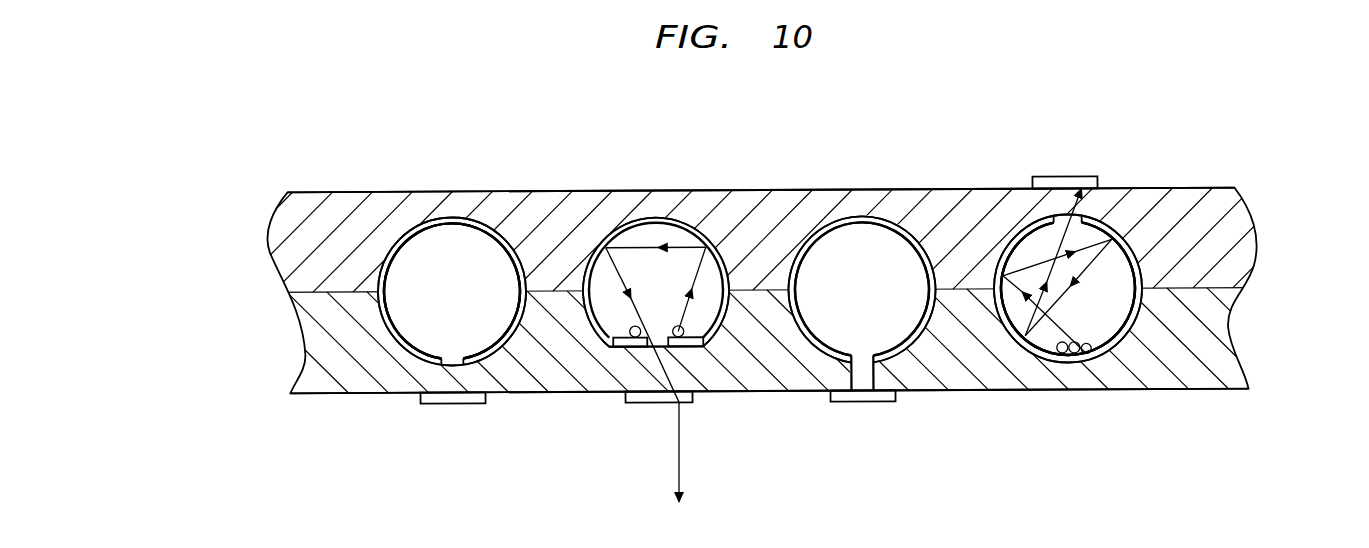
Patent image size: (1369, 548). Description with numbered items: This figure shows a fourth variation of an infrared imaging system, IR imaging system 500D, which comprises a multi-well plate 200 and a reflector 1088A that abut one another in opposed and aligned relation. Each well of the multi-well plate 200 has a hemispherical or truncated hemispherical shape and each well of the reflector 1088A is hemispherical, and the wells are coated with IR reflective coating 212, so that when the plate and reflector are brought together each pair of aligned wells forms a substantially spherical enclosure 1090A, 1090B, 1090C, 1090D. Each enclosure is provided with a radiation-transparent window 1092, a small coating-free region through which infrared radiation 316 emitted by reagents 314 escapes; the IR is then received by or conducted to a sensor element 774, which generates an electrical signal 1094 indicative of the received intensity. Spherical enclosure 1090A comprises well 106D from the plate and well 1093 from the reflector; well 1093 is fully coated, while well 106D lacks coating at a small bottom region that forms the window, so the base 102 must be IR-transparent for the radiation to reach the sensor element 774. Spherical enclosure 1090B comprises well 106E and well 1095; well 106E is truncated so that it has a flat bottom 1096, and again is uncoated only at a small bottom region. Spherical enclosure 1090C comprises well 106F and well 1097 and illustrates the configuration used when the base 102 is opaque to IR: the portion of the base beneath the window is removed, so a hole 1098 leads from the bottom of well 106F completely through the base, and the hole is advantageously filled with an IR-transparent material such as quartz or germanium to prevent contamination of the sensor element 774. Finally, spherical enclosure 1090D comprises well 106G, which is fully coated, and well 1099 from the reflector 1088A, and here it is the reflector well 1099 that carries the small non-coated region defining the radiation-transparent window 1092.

The IR imaging system 500D is at (207, 133).
The reflector 1088A is at (270, 220).
The multi-well plate 200 is at (290, 365).
The base 102 is at (318, 378).
The spherical enclosure 1090A is at (478, 258).
The spherical enclosure 1090B is at (678, 237).
The spherical enclosure 1090C is at (870, 265).
The spherical enclosure 1090D is at (1113, 272).
The well 1093 is at (400, 253).
The well 1095 is at (615, 228).
The well 1097 is at (822, 222).
The well 1099 is at (1130, 235).
The IR reflective coating 212 is at (395, 252).
The radiation-transparent window 1092 is at (452, 352).
The well 106D is at (418, 333).
The well 106E is at (620, 360).
The well 106F is at (897, 330).
The well 106G is at (1103, 325).
The sensor element 774 is at (420, 402).
The reagents 314 is at (633, 329).
The infrared radiation 316 is at (698, 263).
The electrical signal 1094 is at (682, 470).
The flat bottom 1096 is at (687, 352).
The hole 1098 is at (847, 368).